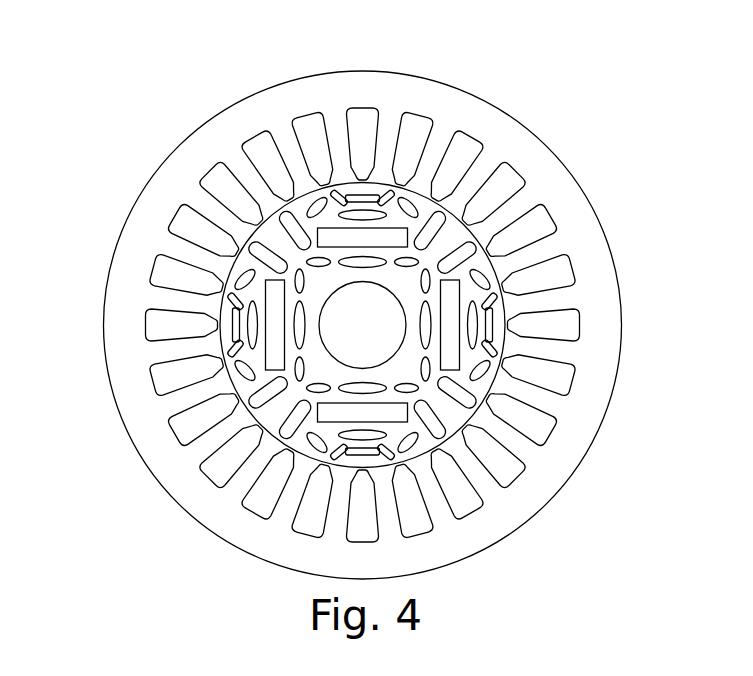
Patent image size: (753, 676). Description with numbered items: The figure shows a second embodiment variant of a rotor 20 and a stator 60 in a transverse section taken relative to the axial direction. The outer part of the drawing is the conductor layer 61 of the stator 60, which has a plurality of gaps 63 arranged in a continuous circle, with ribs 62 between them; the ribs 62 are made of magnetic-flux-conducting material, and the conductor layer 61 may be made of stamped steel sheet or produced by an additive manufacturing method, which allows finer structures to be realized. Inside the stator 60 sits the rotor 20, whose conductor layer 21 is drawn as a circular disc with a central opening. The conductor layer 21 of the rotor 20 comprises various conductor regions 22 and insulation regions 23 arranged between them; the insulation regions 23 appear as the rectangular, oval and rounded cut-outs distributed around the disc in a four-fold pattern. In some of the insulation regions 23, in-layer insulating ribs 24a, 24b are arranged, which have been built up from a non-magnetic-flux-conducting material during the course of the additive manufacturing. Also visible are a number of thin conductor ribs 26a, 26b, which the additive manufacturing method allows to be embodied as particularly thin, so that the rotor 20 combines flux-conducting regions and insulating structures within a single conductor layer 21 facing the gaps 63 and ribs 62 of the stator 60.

The rotor 20 is at (299, 183).
The conductor layer 21 is at (308, 183).
The conductor regions 22 is at (375, 188).
The insulation regions 23 is at (308, 206).
The in-layer insulating rib 24a is at (235, 349).
The in-layer insulating rib 24b is at (277, 374).
The conductor rib 26a is at (238, 282).
The conductor rib 26b is at (238, 348).
The stator 60 is at (571, 146).
The conductor layer 61 is at (568, 172).
The ribs 62 is at (555, 335).
The gaps 63 is at (562, 382).